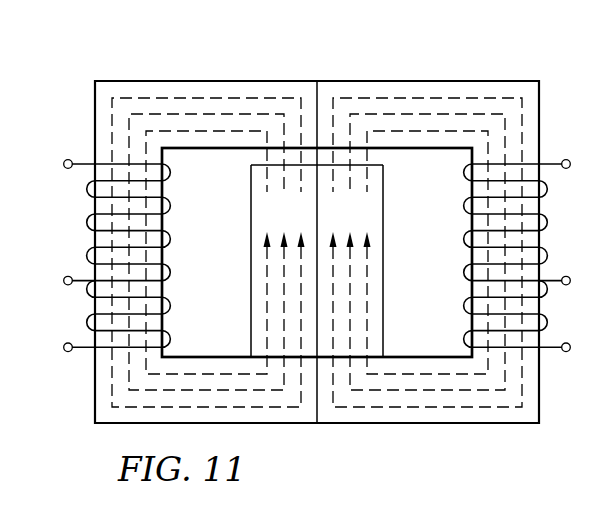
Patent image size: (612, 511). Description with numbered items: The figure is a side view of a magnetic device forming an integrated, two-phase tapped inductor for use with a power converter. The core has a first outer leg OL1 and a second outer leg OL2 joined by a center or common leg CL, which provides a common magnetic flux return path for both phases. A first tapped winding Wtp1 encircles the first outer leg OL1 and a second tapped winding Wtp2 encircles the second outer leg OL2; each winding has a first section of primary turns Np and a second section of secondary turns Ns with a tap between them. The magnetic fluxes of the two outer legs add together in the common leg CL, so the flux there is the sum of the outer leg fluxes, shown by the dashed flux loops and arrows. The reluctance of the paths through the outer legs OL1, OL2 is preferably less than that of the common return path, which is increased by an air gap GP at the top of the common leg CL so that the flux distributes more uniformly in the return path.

The air gap GP is at (342, 141).
The center or common leg CL is at (317, 446).
The first outer leg OL1 is at (184, 252).
The second outer leg OL2 is at (448, 252).
The primary turns Np is at (317, 222).
The secondary turns Ns is at (317, 314).
The first tapped winding Wtp1 is at (52, 256).
The second tapped winding Wtp2 is at (577, 256).